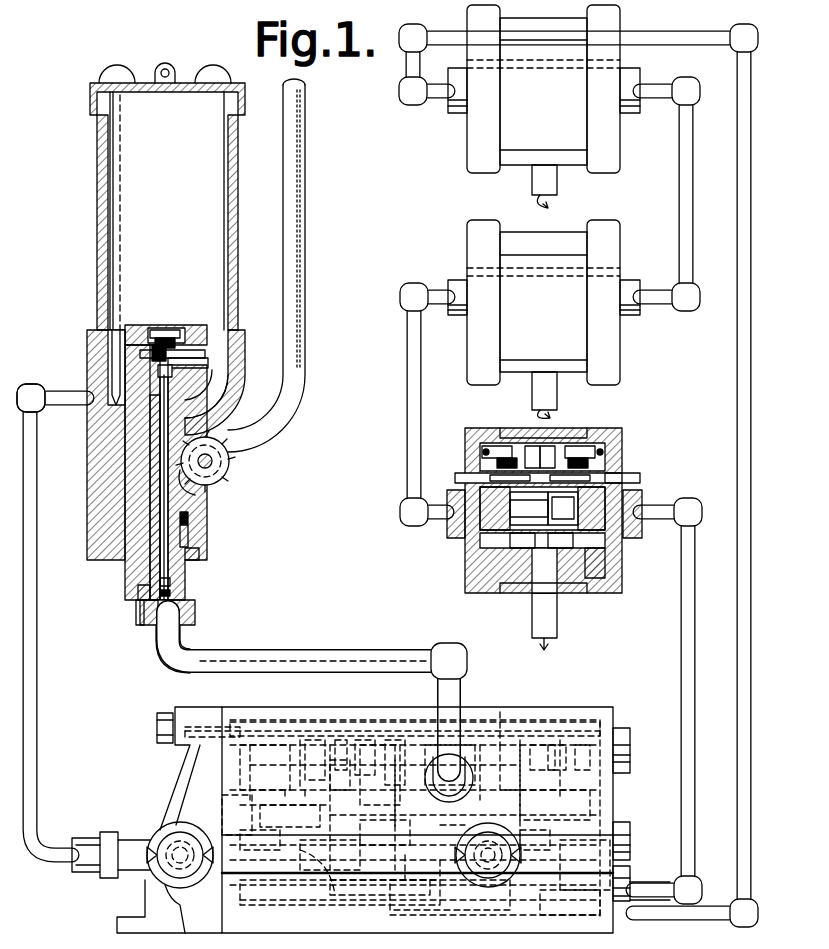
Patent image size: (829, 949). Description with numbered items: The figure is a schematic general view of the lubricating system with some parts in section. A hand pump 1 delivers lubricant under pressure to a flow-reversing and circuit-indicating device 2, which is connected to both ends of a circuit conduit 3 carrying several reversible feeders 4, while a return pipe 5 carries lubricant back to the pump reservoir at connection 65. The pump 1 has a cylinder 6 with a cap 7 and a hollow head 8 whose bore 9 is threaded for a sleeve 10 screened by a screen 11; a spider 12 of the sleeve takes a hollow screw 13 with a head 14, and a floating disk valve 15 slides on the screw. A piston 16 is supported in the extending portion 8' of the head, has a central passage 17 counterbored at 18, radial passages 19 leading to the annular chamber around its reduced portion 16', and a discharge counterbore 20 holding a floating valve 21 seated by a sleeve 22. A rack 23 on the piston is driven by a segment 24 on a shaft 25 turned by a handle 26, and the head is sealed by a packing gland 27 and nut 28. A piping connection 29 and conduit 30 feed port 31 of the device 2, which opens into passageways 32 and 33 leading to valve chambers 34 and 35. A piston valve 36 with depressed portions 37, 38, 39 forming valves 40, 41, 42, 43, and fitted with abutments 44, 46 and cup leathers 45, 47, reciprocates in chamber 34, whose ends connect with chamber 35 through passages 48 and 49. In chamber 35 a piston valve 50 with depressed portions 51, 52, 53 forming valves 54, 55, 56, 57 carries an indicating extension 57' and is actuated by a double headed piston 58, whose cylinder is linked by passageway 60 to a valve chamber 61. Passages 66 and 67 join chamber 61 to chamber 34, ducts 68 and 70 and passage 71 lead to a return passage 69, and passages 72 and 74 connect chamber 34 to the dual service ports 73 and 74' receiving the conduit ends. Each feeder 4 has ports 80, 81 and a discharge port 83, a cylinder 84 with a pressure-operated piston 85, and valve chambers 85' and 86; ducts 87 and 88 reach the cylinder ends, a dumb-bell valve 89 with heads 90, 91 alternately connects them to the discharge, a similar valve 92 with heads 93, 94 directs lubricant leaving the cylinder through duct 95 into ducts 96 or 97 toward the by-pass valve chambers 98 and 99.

The pump 1 is at (108, 247).
The lubricant flow-reversing and circuit-indicating device 2 is at (24, 860).
The circuit pipe-line or conduit 3 is at (400, 70).
The reversible feeder 4 is at (478, 25).
The return pipe 5 is at (37, 666).
The cylinder 6 is at (238, 237).
The cap 7 is at (212, 74).
The hollow head 8 is at (93, 441).
The extending supporting portion 8' is at (117, 472).
The circular bore 9 is at (150, 430).
The sleeve 10 is at (212, 326).
The screen 11 is at (176, 326).
The spider 12 is at (148, 326).
The hollow screw 13 is at (140, 357).
The head 14 is at (208, 360).
The floating disk valve 15 is at (240, 333).
The piston 16 is at (219, 525).
The reduced portion 16' is at (198, 598).
The central passage 17 is at (165, 455).
The counterbore 18 is at (175, 380).
The radial passages 19 is at (145, 594).
The counterbore 20 is at (138, 613).
The floating valve 21 is at (185, 582).
The sleeve 22 is at (195, 613).
The rack 23 is at (180, 470).
The segment 24 is at (200, 492).
The shaft 25 is at (212, 466).
The handle 26 is at (300, 272).
The packing gland 27 is at (199, 555).
The nut 28 is at (188, 535).
The piping connection 29 is at (156, 660).
The conduit 30 is at (310, 649).
The port 31 is at (472, 778).
The passageway 32 is at (409, 789).
The passageway 33 is at (480, 745).
The valve chamber 34 is at (265, 765).
The valve chamber 35 is at (348, 842).
The piston valve 36 is at (325, 740).
The depressed portion 37 is at (370, 740).
The depressed portion 38 is at (437, 720).
The depressed portion 39 is at (500, 745).
The valve 40 is at (345, 740).
The valve 41 is at (398, 740).
The valve 42 is at (500, 712).
The valve 43 is at (559, 737).
The abutment member 44 is at (294, 779).
The cup leather piston 45 is at (316, 782).
The abutment member 46 is at (615, 730).
The leather piston 47 is at (586, 737).
The passage 48 is at (237, 807).
The passage 49 is at (540, 795).
The piston valve 50 is at (290, 812).
The depressed portion 51 is at (380, 892).
The depressed portion 52 is at (439, 887).
The depressed portion 53 is at (528, 845).
The valve 54 is at (325, 884).
The valve 55 is at (419, 879).
The valve 56 is at (505, 870).
The valve 57 is at (577, 865).
The extension 57' is at (633, 828).
The double headed piston 58 is at (240, 880).
The passageway 60 is at (520, 745).
The valve chamber 61 is at (296, 889).
The reservoir connection 65 is at (88, 395).
The passage 66 is at (360, 775).
The passage 67 is at (470, 825).
The duct 68 is at (310, 722).
The return passage 69 is at (270, 722).
The duct 70 is at (545, 745).
The passage 71 is at (384, 847).
The passage 72 is at (384, 900).
The dual service port 73 is at (620, 905).
The passage 74 is at (570, 906).
The dual-service port 74' is at (659, 914).
The port 80 is at (448, 108).
The port 81 is at (645, 110).
The discharge port 83 is at (560, 590).
The cylinder 84 is at (529, 508).
The fluid pressure operated piston 85 is at (563, 508).
The valve chamber 85' is at (471, 457).
The valve chamber 86 is at (480, 560).
The duct 87 is at (480, 540).
The duct 88 is at (605, 540).
The dumb-bell piston type valve 89 is at (565, 550).
The head 90 is at (525, 550).
The head 91 is at (605, 565).
The dumb-bell piston type valve 92 is at (622, 495).
The head 93 is at (490, 480).
The head 94 is at (590, 480).
The duct 95 is at (547, 468).
The duct 96 is at (505, 455).
The duct 97 is at (595, 458).
The by-pass valve chamber 98 is at (533, 446).
The by-pass valve chamber 99 is at (575, 458).